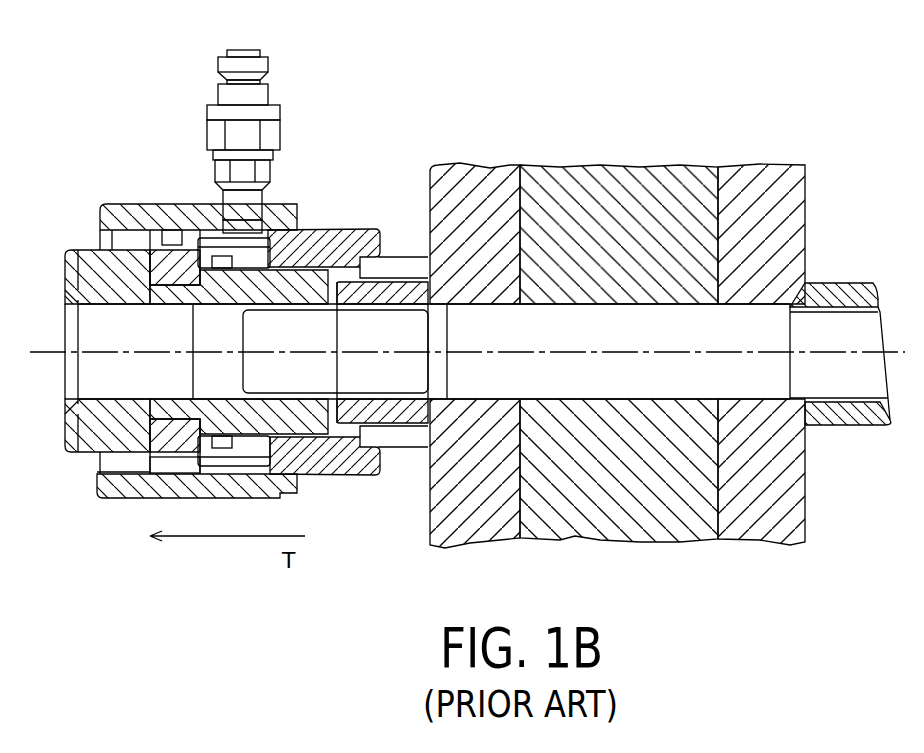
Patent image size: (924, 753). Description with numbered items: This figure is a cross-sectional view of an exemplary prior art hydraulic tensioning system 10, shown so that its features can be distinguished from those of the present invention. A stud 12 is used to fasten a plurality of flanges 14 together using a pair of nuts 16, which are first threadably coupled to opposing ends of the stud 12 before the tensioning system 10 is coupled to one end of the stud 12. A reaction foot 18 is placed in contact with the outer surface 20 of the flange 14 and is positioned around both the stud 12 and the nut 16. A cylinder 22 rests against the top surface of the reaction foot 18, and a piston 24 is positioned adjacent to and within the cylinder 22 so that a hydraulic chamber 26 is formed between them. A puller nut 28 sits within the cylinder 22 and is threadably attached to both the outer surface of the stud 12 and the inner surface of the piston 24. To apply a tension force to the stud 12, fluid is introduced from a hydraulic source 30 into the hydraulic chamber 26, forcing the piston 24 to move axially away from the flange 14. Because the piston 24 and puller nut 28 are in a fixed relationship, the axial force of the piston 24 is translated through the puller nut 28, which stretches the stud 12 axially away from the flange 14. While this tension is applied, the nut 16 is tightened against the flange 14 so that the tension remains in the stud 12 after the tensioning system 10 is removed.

The hydraulic tensioning system 10 is at (73, 141).
The stud 12 is at (733, 330).
The flanges 14 is at (732, 173).
The nuts 16 is at (862, 283).
The reaction foot 18 is at (333, 229).
The outer surface 20 is at (430, 185).
The cylinder 22 is at (298, 228).
The piston 24 is at (158, 252).
The hydraulic chamber 26 is at (293, 242).
The puller nut 28 is at (110, 278).
The hydraulic source 30 is at (268, 93).